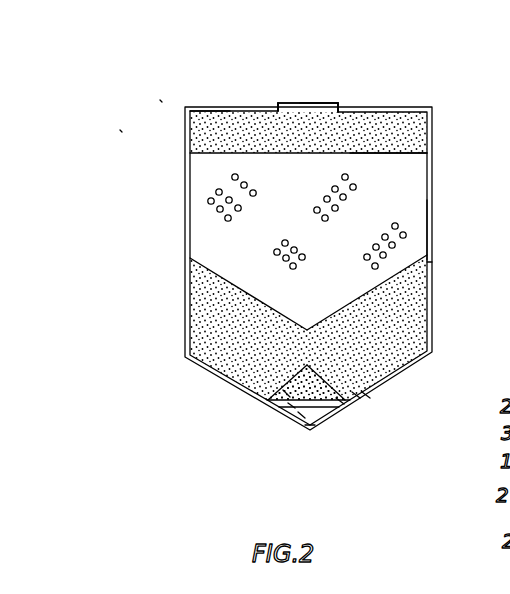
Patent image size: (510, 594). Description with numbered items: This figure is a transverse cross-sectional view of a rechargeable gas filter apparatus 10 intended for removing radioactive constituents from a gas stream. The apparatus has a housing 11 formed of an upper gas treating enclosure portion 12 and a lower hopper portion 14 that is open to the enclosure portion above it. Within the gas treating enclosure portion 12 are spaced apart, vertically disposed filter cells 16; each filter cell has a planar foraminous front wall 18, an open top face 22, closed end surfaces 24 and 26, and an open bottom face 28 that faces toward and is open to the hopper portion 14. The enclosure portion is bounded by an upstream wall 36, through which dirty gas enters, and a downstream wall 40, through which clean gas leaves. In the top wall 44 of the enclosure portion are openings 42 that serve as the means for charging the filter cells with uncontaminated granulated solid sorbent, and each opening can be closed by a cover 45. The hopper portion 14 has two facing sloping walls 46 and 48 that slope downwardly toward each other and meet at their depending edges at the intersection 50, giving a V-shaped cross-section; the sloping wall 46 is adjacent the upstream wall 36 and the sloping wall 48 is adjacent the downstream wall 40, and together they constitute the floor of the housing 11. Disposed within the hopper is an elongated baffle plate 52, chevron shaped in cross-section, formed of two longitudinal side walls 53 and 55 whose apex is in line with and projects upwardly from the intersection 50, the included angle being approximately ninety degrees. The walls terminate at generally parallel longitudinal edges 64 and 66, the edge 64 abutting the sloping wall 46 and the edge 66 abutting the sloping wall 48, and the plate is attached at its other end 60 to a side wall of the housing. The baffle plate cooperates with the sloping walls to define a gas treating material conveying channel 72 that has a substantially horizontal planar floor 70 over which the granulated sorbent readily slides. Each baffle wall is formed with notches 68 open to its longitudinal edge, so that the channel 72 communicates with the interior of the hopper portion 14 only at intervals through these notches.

The rechargeable gas filter apparatus 10 is at (108, 120).
The housing 11 is at (147, 88).
The upper gas treating enclosure portion 12 is at (146, 247).
The lower hopper portion 14 is at (205, 318).
The filter cells 16 is at (402, 178).
The foraminous front wall 18 is at (408, 198).
The open top face 22 is at (375, 152).
The closed end surface 24 is at (186, 195).
The closed end surface 26 is at (432, 226).
The open bottom face 28 is at (377, 288).
The upstream wall 36 is at (170, 285).
The downstream wall 40 is at (438, 266).
The openings 42 is at (283, 104).
The top wall 44 is at (216, 108).
The cover 45 is at (310, 103).
The sloping wall 46 is at (300, 410).
The sloping wall 48 is at (384, 382).
The intersection of the sloping walls 50 is at (300, 415).
The elongated baffle plate 52 is at (265, 378).
The longitudinal side wall 53 is at (283, 377).
The longitudinal side wall 55 is at (330, 378).
The other end of the baffle plate 60 is at (365, 395).
The longitudinal edge 64 is at (290, 405).
The longitudinal edge 66 is at (355, 395).
The notches 68 is at (285, 395).
The planar floor 70 is at (340, 400).
The gas treating material conveying channel 72 is at (310, 430).